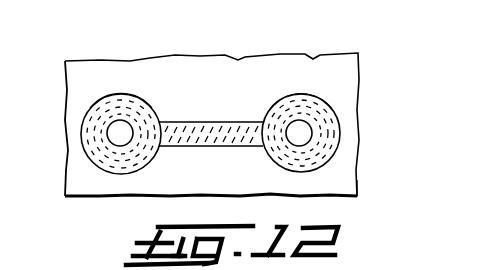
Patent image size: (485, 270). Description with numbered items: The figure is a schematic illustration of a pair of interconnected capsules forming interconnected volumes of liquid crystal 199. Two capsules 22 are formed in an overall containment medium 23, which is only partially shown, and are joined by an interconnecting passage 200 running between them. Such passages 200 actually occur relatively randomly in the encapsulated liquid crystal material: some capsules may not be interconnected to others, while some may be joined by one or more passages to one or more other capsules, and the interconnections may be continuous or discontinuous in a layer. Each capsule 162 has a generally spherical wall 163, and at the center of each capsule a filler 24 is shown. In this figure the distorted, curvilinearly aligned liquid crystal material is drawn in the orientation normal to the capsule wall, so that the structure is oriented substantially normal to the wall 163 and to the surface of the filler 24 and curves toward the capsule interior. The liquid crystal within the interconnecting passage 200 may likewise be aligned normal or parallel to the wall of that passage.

The containment medium 23 is at (101, 72).
The capsule 22 is at (84, 116).
The filler 24 is at (119, 134).
The capsule 162 is at (137, 94).
The interconnecting passage 200 is at (193, 122).
The interconnected volumes of liquid crystal 199 is at (323, 50).
The wall 163 is at (352, 198).